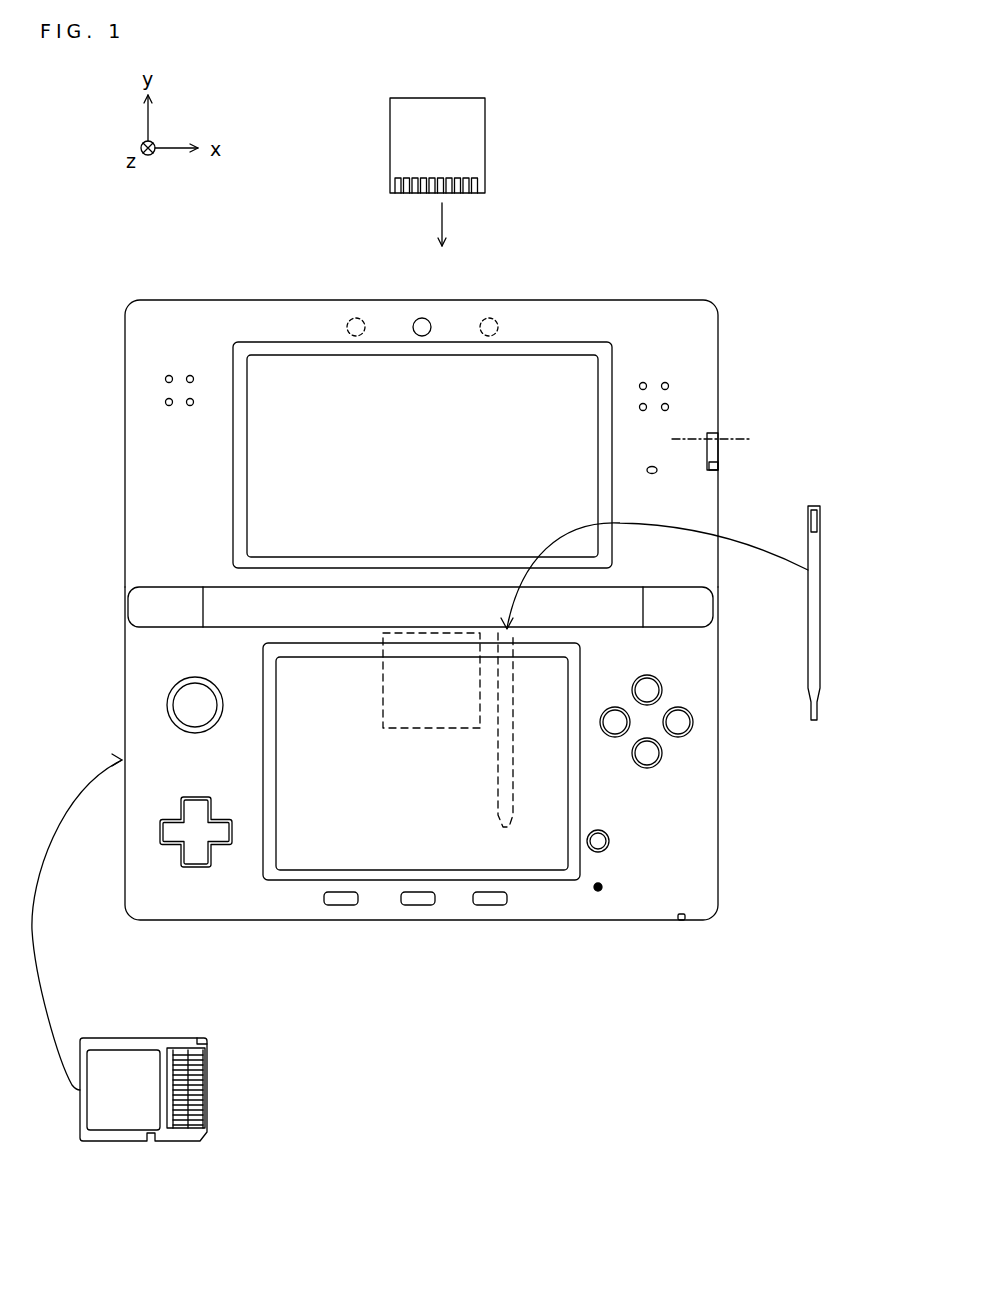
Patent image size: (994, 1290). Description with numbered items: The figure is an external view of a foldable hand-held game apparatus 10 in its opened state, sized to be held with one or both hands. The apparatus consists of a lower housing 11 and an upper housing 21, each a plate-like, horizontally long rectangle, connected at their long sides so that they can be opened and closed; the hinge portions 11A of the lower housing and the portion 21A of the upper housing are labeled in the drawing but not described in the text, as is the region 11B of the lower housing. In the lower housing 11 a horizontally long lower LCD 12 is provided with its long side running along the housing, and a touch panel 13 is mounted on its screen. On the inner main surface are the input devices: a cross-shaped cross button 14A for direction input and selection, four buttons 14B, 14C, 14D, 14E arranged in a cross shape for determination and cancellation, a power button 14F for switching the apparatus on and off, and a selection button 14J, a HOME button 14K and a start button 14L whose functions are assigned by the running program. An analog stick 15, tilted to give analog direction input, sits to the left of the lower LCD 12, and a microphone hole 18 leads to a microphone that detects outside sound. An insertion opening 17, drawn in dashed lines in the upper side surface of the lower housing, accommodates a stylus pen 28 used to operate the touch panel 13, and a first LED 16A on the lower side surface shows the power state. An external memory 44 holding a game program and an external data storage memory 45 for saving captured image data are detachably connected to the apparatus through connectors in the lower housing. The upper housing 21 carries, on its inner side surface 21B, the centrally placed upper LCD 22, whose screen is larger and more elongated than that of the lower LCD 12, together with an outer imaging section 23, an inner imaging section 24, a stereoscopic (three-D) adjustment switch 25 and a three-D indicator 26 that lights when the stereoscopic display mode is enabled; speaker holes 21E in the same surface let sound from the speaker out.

The game apparatus 10 is at (708, 285).
The lower housing 11 is at (295, 920).
The hinge projection portions of lower housing 11A is at (128, 602).
The inner side surface of lower housing 11B is at (708, 825).
The lower LCD 12 is at (393, 848).
The touch panel 13 is at (553, 848).
The cross button 14A is at (175, 843).
The button 14B is at (680, 720).
The button 14C is at (646, 758).
The button 14D is at (650, 688).
The button 14E is at (615, 724).
The power button 14F is at (610, 840).
The selection button 14J is at (341, 905).
The HOME button 14K is at (418, 905).
The start button 14L is at (490, 905).
The analog stick 15 is at (178, 708).
The first LED 16A is at (681, 921).
The insertion opening 17 is at (510, 633).
The microphone hole 18 is at (598, 892).
The upper housing 21 is at (640, 300).
The projection portion of upper housing 21A is at (282, 610).
The inner side surface 21B is at (166, 329).
The speaker holes 21E is at (168, 380).
The upper LCD 22 is at (292, 355).
The outer imaging section 23 is at (489, 318).
The inner imaging section 24 is at (422, 318).
The 3D adjustment switch 25 is at (717, 458).
The 3D indicator 26 is at (657, 472).
The stylus pen 28 is at (820, 601).
The external memory 44 is at (457, 98).
The external data storage memory 45 is at (143, 1141).